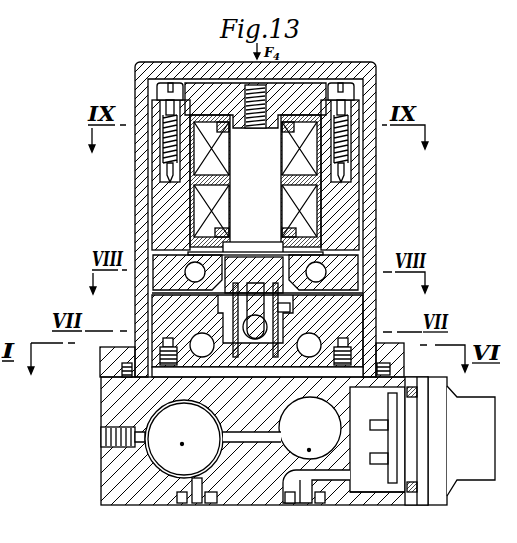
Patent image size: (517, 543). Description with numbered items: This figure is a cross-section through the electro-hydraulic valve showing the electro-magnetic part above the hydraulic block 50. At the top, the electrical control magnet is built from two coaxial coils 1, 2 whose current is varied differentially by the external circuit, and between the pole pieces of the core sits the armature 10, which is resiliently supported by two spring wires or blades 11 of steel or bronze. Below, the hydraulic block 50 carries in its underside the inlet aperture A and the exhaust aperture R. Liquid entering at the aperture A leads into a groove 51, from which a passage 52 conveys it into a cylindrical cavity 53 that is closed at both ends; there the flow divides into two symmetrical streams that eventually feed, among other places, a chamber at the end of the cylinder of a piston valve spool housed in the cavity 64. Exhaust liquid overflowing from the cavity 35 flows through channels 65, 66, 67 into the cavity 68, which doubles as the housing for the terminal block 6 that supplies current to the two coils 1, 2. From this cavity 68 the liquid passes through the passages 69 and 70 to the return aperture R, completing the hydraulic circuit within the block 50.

The coil 1 is at (308, 152).
The coil 2 is at (306, 212).
The terminal block 6 is at (478, 452).
The armature 10 is at (252, 268).
The spring wires or blades 11 is at (288, 307).
The cavity 35 is at (250, 342).
The hydraulic block 50 is at (237, 484).
The groove 51 is at (167, 474).
The passage 52 is at (254, 444).
The cylindrical cavity 53 is at (311, 437).
The cavity 64 is at (184, 439).
The channel 65 is at (360, 353).
The channel 66 is at (322, 375).
The channel 67 is at (345, 394).
The cavity 68 is at (387, 492).
The passage 69 is at (338, 481).
The passage 70 is at (278, 519).
The inlet aperture A is at (197, 504).
The exhaust aperture R is at (316, 500).